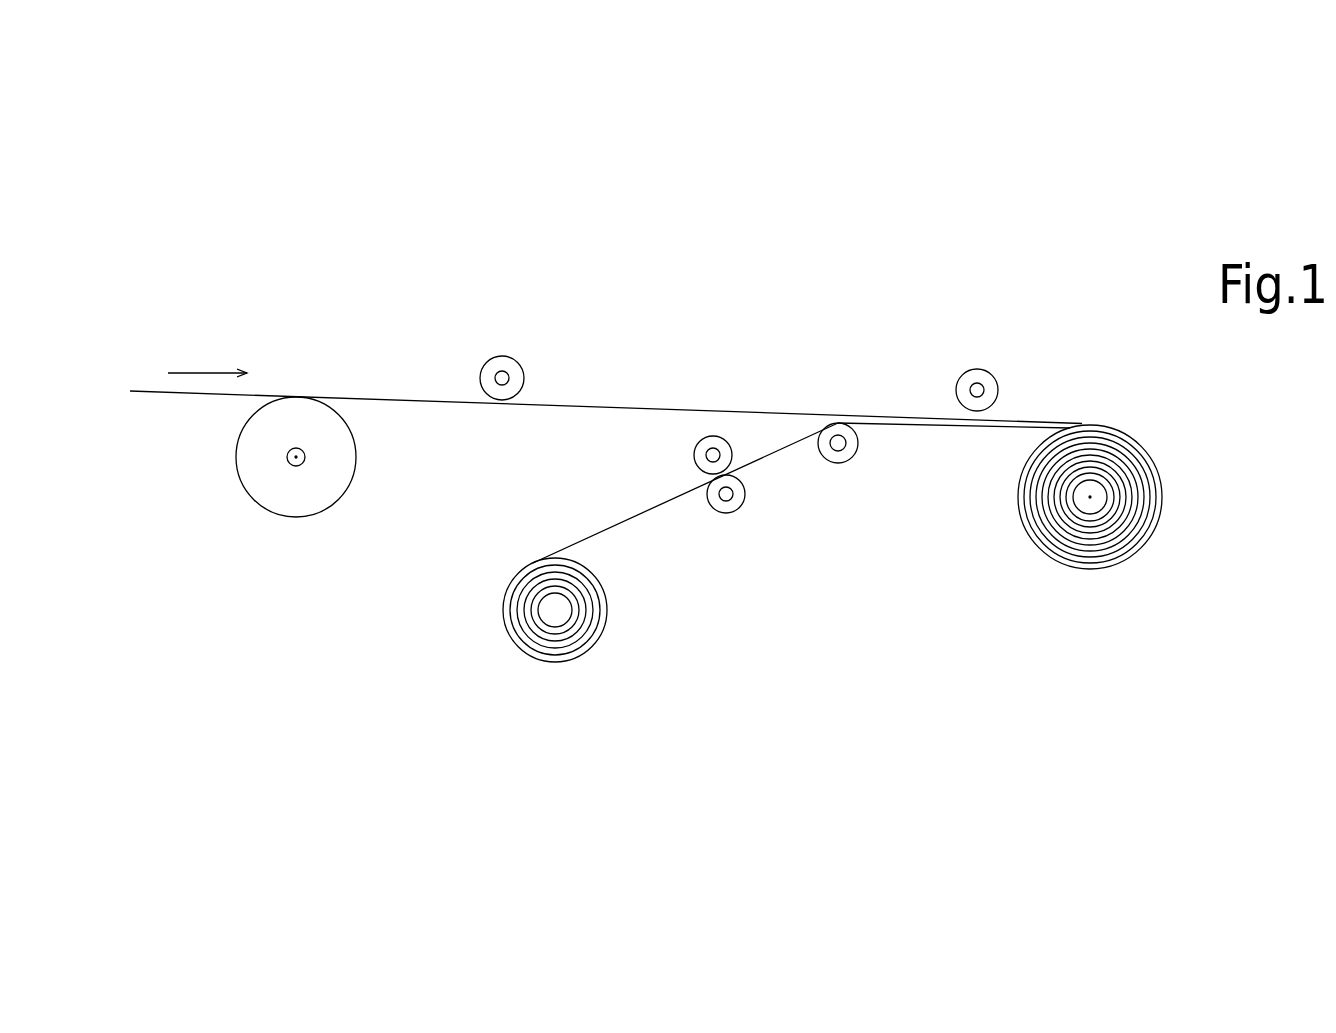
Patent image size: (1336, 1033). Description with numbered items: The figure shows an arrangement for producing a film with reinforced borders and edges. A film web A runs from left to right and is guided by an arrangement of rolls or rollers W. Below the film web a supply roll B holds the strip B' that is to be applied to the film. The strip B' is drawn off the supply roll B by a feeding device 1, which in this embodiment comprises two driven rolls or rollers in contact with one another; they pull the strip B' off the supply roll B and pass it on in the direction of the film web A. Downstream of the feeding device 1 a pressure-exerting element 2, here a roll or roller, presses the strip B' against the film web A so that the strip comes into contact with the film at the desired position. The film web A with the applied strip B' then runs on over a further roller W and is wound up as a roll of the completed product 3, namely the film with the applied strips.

The film web A is at (400, 396).
The rolls or rollers W is at (288, 521).
The strip B' is at (801, 493).
The supply roll B is at (536, 643).
The feeding device 1 is at (744, 514).
The pressure-exerting element 2 is at (851, 470).
The roll of the completed product 3 is at (1149, 547).